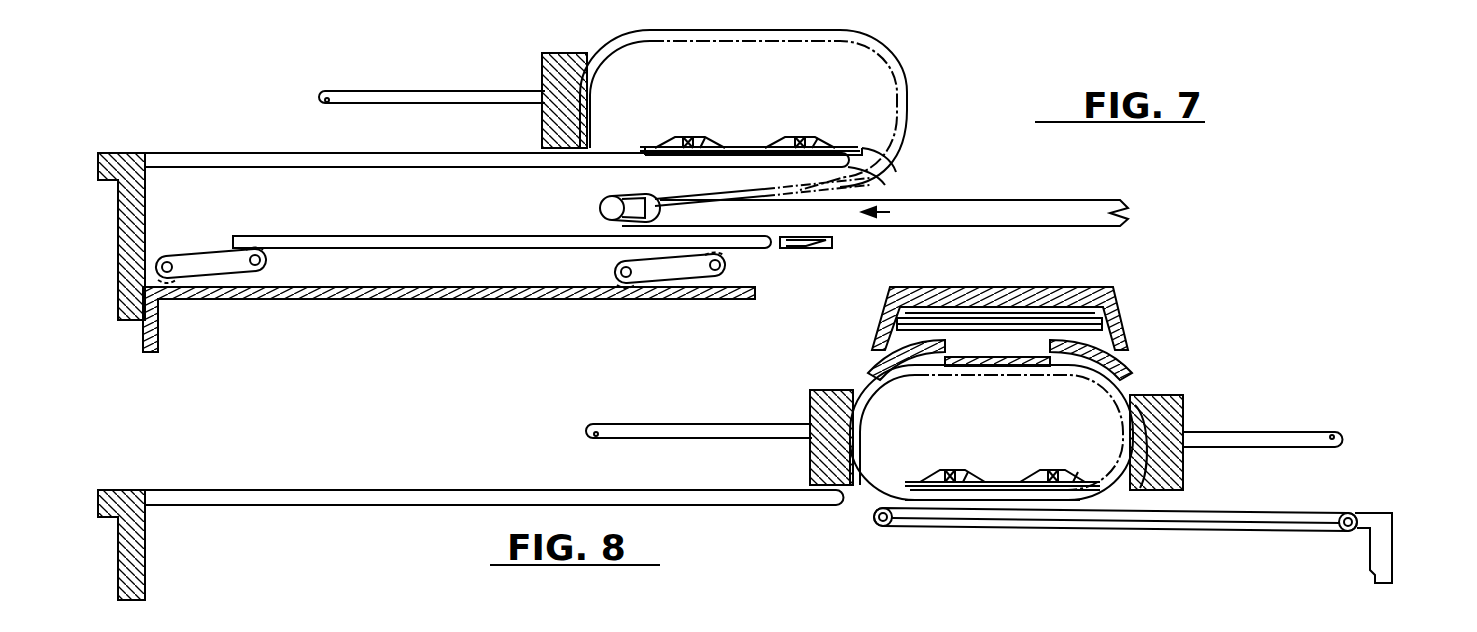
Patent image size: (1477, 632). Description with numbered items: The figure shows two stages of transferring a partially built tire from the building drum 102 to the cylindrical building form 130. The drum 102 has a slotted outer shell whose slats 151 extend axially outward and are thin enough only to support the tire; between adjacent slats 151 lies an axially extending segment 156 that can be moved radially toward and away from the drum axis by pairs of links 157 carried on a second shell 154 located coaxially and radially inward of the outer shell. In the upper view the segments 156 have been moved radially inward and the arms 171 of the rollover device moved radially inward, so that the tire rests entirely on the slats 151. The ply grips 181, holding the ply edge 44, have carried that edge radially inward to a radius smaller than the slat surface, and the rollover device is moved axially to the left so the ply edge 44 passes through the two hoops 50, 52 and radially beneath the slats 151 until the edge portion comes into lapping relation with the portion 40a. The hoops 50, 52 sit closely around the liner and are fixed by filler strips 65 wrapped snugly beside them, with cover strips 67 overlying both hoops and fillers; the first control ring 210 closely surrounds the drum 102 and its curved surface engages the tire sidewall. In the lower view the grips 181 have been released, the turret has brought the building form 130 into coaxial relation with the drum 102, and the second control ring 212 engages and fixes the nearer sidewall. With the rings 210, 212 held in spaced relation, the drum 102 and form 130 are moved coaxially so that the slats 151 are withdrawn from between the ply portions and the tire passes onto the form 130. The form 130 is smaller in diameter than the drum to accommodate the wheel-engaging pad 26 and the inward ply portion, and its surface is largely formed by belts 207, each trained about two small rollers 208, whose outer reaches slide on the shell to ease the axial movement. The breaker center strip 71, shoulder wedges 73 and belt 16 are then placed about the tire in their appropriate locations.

In FIG. 7, the drum 102 is at (298, 152).
In FIG. 8, the drum 102 is at (258, 490).
In FIG. 7, the slats 151 is at (482, 160).
In FIG. 8, the slats 151 is at (388, 497).
In FIG. 7, the second shell 154 is at (455, 300).
In FIG. 7, the links 157 is at (208, 262).
In FIG. 7, the segment 156 is at (834, 243).
In FIG. 7, the arms 171 is at (1133, 208).
In FIG. 7, the ply grips 181 is at (600, 208).
In FIG. 7, the ply edge 44 is at (630, 196).
In FIG. 7, the first control ring 210 is at (558, 62).
In FIG. 8, the first control ring 210 is at (825, 400).
In FIG. 7, the ply portion 40a is at (752, 150).
In FIG. 7, the cover strips 67 is at (672, 142).
In FIG. 8, the cover strips 67 is at (927, 478).
In FIG. 7, the hoop 52 is at (689, 140).
In FIG. 8, the hoop 52 is at (950, 468).
In FIG. 7, the filler strips 65 is at (710, 147).
In FIG. 8, the filler strips 65 is at (965, 480).
In FIG. 7, the hoop 50 is at (805, 140).
In FIG. 8, the hoop 50 is at (1050, 468).
In FIG. 8, the second control ring 212 is at (1165, 400).
In FIG. 8, the belt 16 is at (1033, 321).
In FIG. 8, the shoulder wedge 73 is at (875, 355).
In FIG. 8, the breaker center strip 71 is at (1012, 362).
In FIG. 8, the belts 207 is at (1302, 508).
In FIG. 8, the wheel-engaging pad 26 is at (1007, 502).
In FIG. 8, the rollers 208 is at (883, 527).
In FIG. 8, the building form 130 is at (1372, 510).